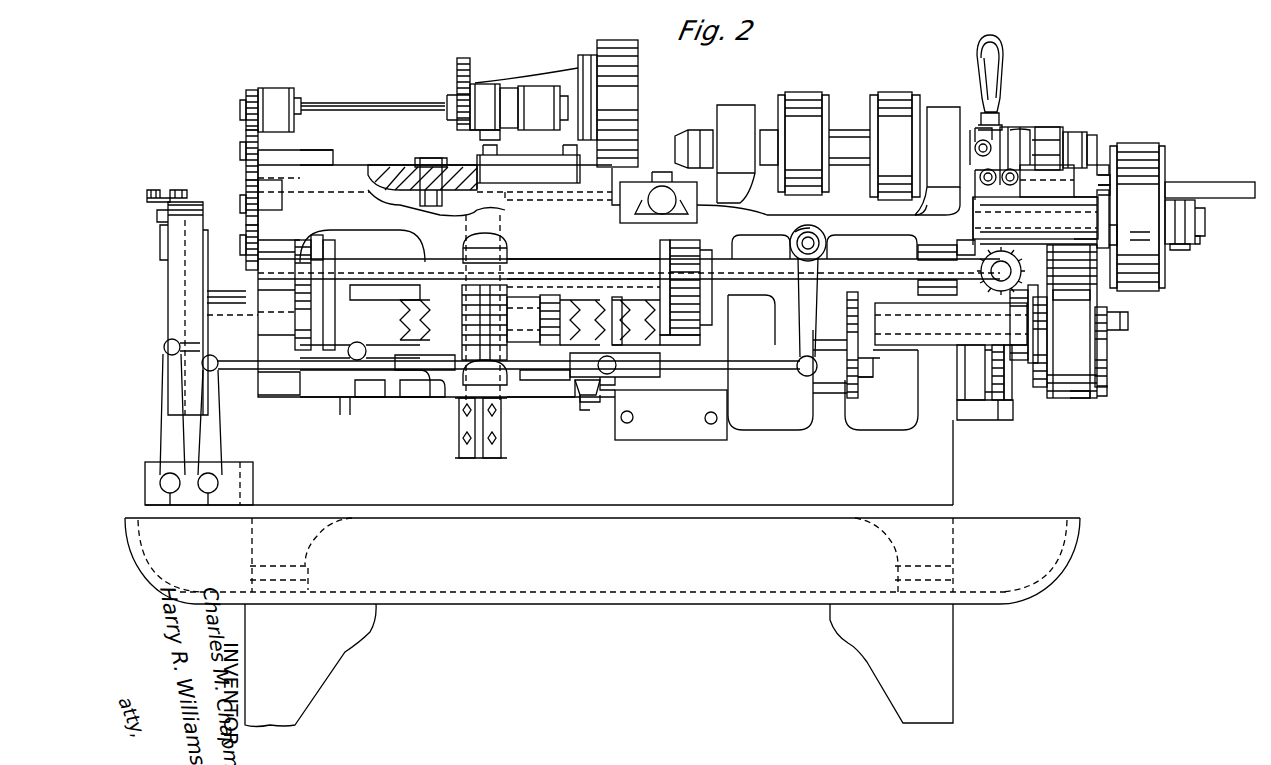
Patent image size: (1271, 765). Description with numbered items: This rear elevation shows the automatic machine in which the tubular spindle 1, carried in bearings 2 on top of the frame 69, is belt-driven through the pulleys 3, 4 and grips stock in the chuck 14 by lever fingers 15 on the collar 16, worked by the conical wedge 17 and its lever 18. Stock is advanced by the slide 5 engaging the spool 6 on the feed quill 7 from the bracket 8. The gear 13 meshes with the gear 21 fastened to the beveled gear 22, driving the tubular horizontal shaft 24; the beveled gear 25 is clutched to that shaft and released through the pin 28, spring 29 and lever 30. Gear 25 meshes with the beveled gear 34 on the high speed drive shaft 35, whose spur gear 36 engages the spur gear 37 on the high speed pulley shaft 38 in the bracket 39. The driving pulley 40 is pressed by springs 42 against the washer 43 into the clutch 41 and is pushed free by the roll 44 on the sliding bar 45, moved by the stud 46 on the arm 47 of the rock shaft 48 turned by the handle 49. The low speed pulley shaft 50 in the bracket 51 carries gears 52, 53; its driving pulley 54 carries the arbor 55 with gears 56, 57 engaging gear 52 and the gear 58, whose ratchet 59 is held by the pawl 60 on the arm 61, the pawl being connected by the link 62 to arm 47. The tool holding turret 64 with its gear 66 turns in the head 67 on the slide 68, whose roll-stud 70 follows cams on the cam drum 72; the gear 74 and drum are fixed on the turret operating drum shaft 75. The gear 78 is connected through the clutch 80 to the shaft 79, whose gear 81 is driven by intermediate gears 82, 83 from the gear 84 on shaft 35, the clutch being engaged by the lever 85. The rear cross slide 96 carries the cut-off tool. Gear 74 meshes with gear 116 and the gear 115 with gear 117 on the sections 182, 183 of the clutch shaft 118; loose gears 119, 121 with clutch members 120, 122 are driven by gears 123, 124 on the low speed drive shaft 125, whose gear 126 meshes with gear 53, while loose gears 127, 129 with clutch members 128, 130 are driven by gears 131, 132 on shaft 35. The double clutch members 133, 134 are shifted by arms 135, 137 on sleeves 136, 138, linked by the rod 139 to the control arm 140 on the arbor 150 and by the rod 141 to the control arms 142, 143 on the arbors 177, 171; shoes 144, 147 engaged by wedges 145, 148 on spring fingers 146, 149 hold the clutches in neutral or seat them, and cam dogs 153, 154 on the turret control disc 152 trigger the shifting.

The tubular spindle 1 is at (849, 147).
The bearings 2 is at (838, 160).
The pulley 3 is at (895, 146).
The pulley 4 is at (803, 143).
The slide 5 is at (1105, 165).
The spool 6 is at (1090, 152).
The feed quill 7 is at (1072, 132).
The bracket 8 is at (1210, 189).
The gear 13 is at (1072, 245).
The chuck 14 is at (698, 134).
The lever fingers 15 is at (1016, 130).
The collar 16 is at (1045, 132).
The conical wedge 17 is at (990, 125).
The lever 18 is at (980, 176).
The gear 21 is at (1000, 225).
The beveled gear 22 is at (1050, 266).
The tubular horizontal shaft 24 is at (1001, 271).
The beveled gear 25 is at (965, 305).
The pin 28 is at (1008, 392).
The spring 29 is at (1005, 405).
The lever 30 is at (985, 365).
The beveled gear 34 is at (918, 255).
The high speed drive shaft 35 is at (740, 270).
The spur gear 36 is at (930, 286).
The spur gear 37 is at (960, 244).
The high speed pulley shaft 38 is at (1195, 212).
The bracket 39 is at (1047, 181).
The driving pulley 40 is at (1137, 217).
The clutch 41 is at (1115, 240).
The springs 42 is at (1180, 244).
The washer 43 is at (1190, 240).
The roll 44 is at (1110, 185).
The sliding bar 45 is at (1100, 165).
The stud 46 is at (1025, 130).
The arm 47 is at (1005, 128).
The rock shaft 48 is at (940, 195).
The handle 49 is at (1000, 52).
The low speed pulley shaft 50 is at (915, 347).
The bracket 51 is at (915, 350).
The gear 52 is at (1115, 330).
The gear 53 is at (848, 315).
The driving pulley 54 is at (1100, 396).
The arbor 55 is at (1080, 393).
The gear 56 is at (1100, 380).
The gear 57 is at (1003, 375).
The gear 58 is at (1050, 319).
The ratchet 59 is at (1030, 326).
The pawl 60 is at (1045, 290).
The arm 61 is at (1008, 305).
The link 62 is at (1020, 220).
The tool holding turret 64 is at (608, 103).
The gear 66 is at (457, 68).
The head 67 is at (544, 168).
The slide 68 is at (422, 165).
The frame 69 is at (318, 167).
The roll-stud 70 is at (418, 204).
The cam drum 72 is at (341, 246).
The gear 74 is at (465, 245).
The turret operating drum shaft 75 is at (245, 300).
The gear 78 is at (506, 88).
The shaft 79 is at (385, 104).
The clutch 80 is at (488, 98).
The gear 81 is at (246, 96).
The intermediate gear 82 is at (246, 138).
The intermediate gear 83 is at (246, 182).
The gear 84 is at (246, 236).
The lever 85 is at (465, 133).
The rear cross slide 96 is at (658, 197).
The gear 115 is at (505, 255).
The gear 116 is at (460, 300).
The gear 117 is at (515, 310).
The clutch shaft 118 is at (540, 275).
The gear 119 is at (420, 300).
The clutch member 120 is at (360, 349).
The gear 121 is at (550, 310).
The clutch member 122 is at (582, 330).
The gear 123 is at (425, 400).
The gear 124 is at (550, 400).
The low speed drive shaft 125 is at (770, 375).
The gear 126 is at (858, 388).
The gear 127 is at (295, 312).
The clutch member 128 is at (335, 300).
The gear 129 is at (670, 340).
The clutch member 130 is at (650, 335).
The gear 131 is at (298, 244).
The gear 132 is at (680, 250).
The double clutch member 133 is at (325, 380).
The double clutch member 134 is at (620, 315).
The arm 135 is at (365, 292).
The sleeve 136 is at (342, 400).
The arm 137 is at (598, 285).
The sleeve 138 is at (645, 390).
The rod 139 is at (280, 388).
The control arm 140 is at (165, 444).
The rod 141 is at (516, 405).
The control arm 142 is at (212, 444).
The control arm 143 is at (800, 298).
The shoe 144 is at (370, 400).
The wedge 145 is at (405, 400).
The spring finger 146 is at (458, 410).
The shoe 147 is at (608, 410).
The wedge 148 is at (592, 405).
The spring finger 149 is at (575, 415).
The arbor 150 is at (150, 488).
The turret control disc 152 is at (182, 308).
The cam dog 153 is at (152, 191).
The cam dog 154 is at (185, 186).
The arbor 171 is at (826, 240).
The arbor 177 is at (240, 488).
The clutch shaft section 182 is at (315, 250).
The clutch shaft section 183 is at (660, 245).